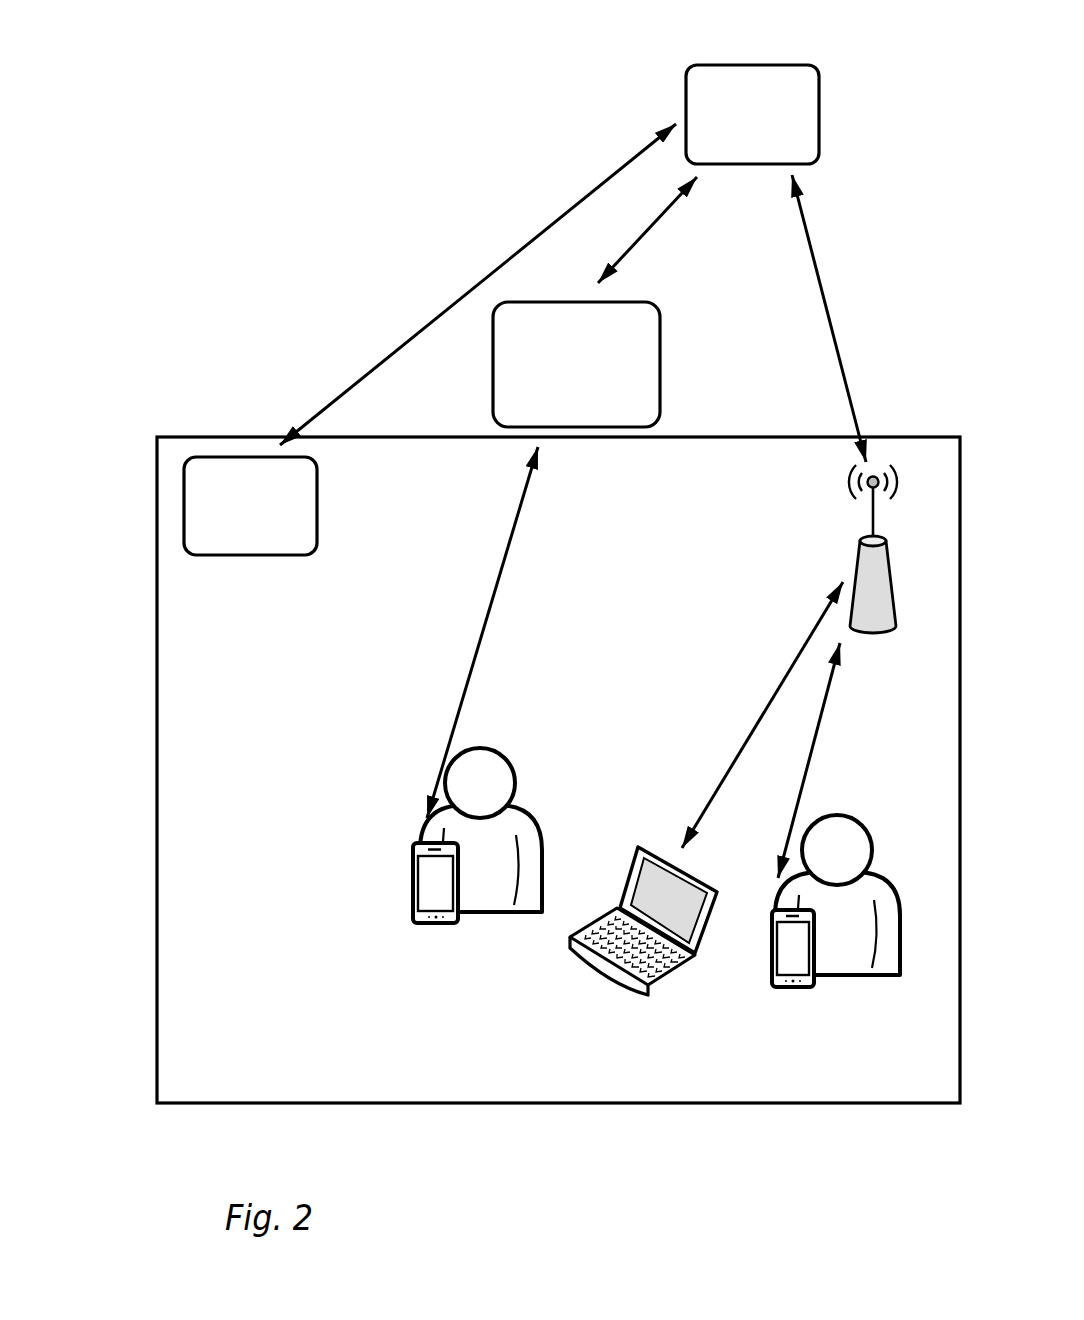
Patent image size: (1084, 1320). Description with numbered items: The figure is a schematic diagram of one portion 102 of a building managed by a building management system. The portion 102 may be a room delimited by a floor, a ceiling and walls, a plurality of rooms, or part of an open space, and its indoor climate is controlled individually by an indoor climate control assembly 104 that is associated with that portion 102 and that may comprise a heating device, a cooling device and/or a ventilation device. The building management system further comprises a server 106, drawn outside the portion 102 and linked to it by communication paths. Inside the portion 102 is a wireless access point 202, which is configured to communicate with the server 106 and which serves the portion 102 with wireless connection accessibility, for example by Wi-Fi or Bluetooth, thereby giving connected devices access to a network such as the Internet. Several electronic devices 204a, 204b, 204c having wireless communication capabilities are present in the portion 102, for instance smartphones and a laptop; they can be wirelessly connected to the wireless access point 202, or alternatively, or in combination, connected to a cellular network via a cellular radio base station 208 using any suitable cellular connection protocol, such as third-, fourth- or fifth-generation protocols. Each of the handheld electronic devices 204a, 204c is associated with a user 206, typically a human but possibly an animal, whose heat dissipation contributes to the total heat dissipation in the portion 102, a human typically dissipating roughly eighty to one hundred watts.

The portion of the building 102 is at (190, 758).
The indoor climate control assembly 104 is at (212, 548).
The server 106 is at (789, 73).
The wireless access point 202 is at (868, 610).
The electronic device 204a is at (433, 893).
The electronic device 204b is at (628, 953).
The electronic device 204c is at (790, 960).
The user 206 is at (493, 883).
The cellular radio base station 208 is at (642, 330).